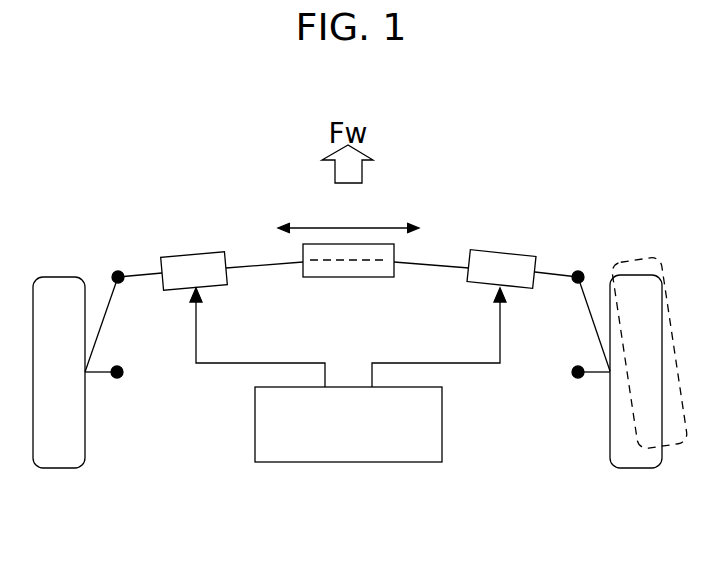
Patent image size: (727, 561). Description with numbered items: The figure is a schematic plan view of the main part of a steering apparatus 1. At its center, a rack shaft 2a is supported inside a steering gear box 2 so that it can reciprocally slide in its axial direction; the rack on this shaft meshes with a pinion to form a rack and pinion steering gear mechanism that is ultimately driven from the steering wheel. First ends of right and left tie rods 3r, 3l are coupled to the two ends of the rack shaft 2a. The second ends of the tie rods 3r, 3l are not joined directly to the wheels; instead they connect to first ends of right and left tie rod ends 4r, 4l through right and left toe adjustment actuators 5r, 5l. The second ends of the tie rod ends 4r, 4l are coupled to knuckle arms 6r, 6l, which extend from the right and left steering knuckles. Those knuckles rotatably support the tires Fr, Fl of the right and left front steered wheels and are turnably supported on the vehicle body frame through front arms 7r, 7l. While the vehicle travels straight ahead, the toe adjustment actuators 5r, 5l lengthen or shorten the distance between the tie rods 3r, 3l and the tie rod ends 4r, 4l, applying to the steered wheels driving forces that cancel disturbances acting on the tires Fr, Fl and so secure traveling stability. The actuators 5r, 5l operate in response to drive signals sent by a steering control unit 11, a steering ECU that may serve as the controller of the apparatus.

The steering apparatus 1 is at (540, 195).
The steering gear box 2 is at (345, 278).
The rack shaft 2a is at (372, 262).
The left tie rod 3l is at (257, 264).
The right tie rod 3r is at (447, 263).
The left tie rod end 4l is at (136, 267).
The right tie rod end 4r is at (557, 270).
The left toe adjustment actuator 5l is at (196, 252).
The right toe adjustment actuator 5r is at (500, 250).
The left knuckle arm 6l is at (100, 325).
The right knuckle arm 6r is at (595, 322).
The left front arm 7l is at (100, 375).
The right front arm 7r is at (593, 380).
The steering control unit 11 is at (275, 462).
The left front wheel tire Fl is at (60, 468).
The right front wheel tire Fr is at (635, 468).